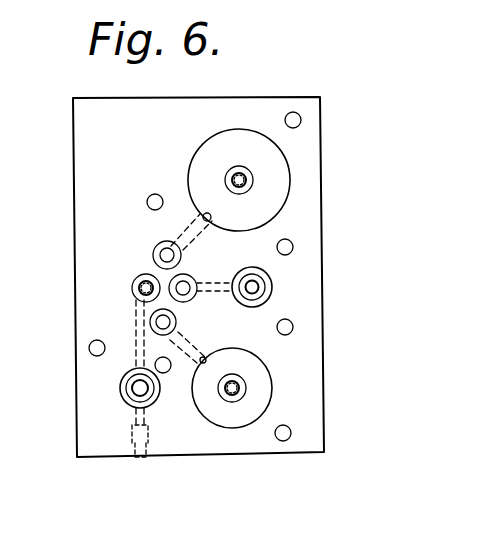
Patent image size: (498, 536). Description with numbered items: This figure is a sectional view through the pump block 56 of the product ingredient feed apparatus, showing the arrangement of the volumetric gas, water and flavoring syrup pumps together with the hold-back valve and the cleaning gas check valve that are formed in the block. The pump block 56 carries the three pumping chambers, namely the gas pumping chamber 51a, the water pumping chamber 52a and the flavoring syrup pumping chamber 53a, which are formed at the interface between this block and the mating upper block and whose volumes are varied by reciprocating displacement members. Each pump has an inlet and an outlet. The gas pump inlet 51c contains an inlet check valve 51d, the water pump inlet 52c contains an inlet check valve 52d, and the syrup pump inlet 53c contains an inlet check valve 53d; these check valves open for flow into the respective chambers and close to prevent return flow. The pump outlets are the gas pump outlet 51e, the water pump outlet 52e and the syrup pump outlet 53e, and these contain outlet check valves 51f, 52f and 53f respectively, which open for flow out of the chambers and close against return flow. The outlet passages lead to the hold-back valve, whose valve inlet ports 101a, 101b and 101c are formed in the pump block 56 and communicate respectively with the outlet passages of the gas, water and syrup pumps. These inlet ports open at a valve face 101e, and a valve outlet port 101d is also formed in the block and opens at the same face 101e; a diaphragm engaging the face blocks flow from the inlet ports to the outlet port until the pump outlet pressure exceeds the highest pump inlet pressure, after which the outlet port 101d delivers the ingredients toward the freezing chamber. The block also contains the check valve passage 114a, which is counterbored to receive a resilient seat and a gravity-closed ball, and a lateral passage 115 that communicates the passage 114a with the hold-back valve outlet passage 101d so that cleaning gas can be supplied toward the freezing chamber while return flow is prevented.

The pumping chamber 51a is at (238, 128).
The pump inlet 51c is at (253, 176).
The inlet check valve 51d is at (246, 184).
The pump outlet 51e is at (183, 229).
The outlet check valve 51f is at (172, 254).
The pump outlet 53e is at (213, 282).
The pump inlet 53c is at (272, 275).
The inlet check valve 53d is at (264, 282).
The pumping chamber 53a is at (259, 287).
The outlet check valve 53f is at (185, 302).
The pump outlet 52e is at (203, 336).
The pump inlet 52c is at (246, 377).
The pumping chamber 52a is at (270, 380).
The inlet check valve 52d is at (238, 397).
The outlet check valve 52f is at (163, 324).
The pump block 56 is at (250, 443).
The valve inlet port 101a is at (158, 250).
The valve face 101e is at (127, 262).
The valve outlet port 101d is at (133, 290).
The valve inlet port 101c is at (173, 297).
The valve inlet port 101b is at (148, 323).
The lateral passage 115 is at (135, 355).
The passage 114a is at (125, 398).